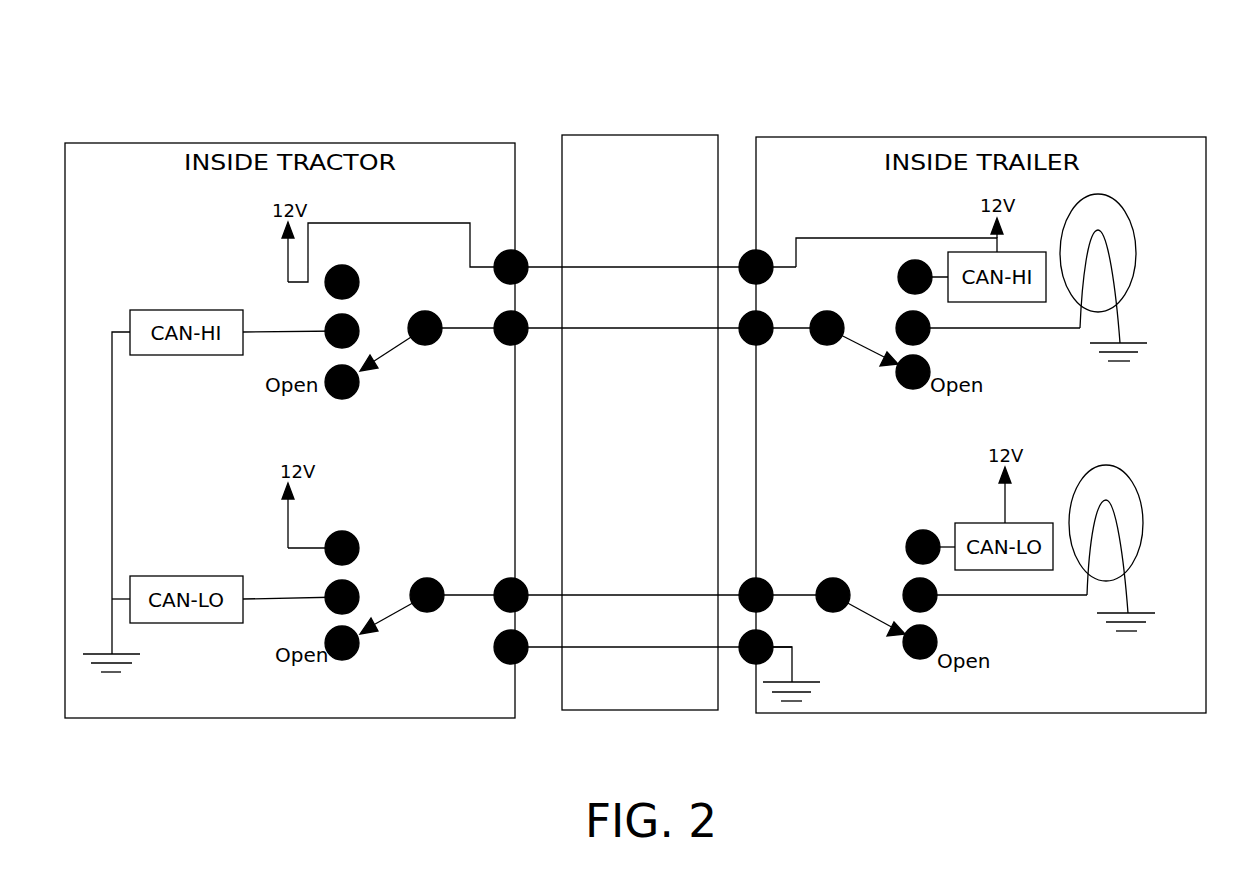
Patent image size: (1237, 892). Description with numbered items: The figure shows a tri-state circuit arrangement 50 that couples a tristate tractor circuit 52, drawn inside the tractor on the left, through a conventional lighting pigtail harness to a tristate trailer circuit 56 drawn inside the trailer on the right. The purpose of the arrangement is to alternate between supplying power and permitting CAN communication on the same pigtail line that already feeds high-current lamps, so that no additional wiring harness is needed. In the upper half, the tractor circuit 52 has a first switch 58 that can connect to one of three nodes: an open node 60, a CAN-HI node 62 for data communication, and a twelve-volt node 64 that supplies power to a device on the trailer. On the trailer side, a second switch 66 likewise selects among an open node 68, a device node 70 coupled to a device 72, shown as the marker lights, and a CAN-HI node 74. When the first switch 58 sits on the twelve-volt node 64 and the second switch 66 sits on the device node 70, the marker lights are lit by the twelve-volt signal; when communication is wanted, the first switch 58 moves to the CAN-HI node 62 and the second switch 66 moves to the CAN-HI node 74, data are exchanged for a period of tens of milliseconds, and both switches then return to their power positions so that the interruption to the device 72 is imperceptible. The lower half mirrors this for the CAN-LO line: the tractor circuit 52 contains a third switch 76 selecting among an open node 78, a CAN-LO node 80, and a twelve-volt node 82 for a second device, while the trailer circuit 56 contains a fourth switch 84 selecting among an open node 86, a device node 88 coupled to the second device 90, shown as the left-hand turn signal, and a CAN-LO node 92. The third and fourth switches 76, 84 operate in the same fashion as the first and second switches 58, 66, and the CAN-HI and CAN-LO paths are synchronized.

The tri-state circuit arrangement 50 is at (838, 72).
The tristate tractor circuit 52 is at (399, 141).
The tristate trailer circuit 56 is at (1053, 137).
The first switch 58 is at (397, 350).
The open node 60 is at (355, 395).
The CAN-HI node 62 is at (357, 324).
The 12V node 64 is at (357, 276).
The second switch 66 is at (858, 348).
The open node 68 is at (900, 385).
The device node 70 is at (897, 314).
The device 72 is at (1133, 272).
The CAN-HI node 74 is at (897, 268).
The third switch 76 is at (405, 620).
The open node 78 is at (355, 656).
The CAN-LO node 80 is at (357, 590).
The 12V node 82 is at (355, 541).
The fourth switch 84 is at (863, 618).
The open node 86 is at (909, 656).
The device node 88 is at (907, 583).
The second device 90 is at (1140, 540).
The CAN-LO node 92 is at (905, 536).